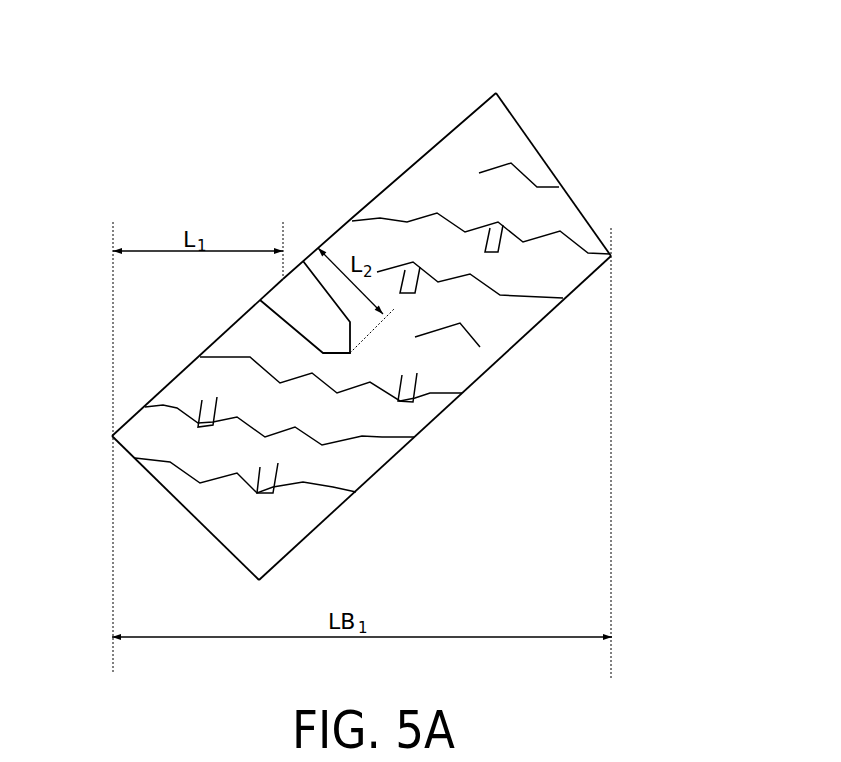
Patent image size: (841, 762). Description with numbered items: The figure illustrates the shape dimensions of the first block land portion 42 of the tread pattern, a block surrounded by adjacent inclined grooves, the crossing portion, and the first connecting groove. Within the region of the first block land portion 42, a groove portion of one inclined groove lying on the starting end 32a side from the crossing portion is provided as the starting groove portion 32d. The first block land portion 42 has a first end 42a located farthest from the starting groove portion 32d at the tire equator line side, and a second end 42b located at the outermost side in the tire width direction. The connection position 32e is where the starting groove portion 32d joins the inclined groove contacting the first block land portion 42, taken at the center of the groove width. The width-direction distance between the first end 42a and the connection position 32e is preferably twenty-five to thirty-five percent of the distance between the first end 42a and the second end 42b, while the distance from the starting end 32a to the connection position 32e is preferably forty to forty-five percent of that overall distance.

The first block land portion 42 is at (463, 66).
The first end 42a is at (112, 436).
The second end 42b is at (611, 256).
The starting end 32a is at (352, 353).
The starting groove portion 32d is at (318, 261).
The connection position 32e is at (283, 279).